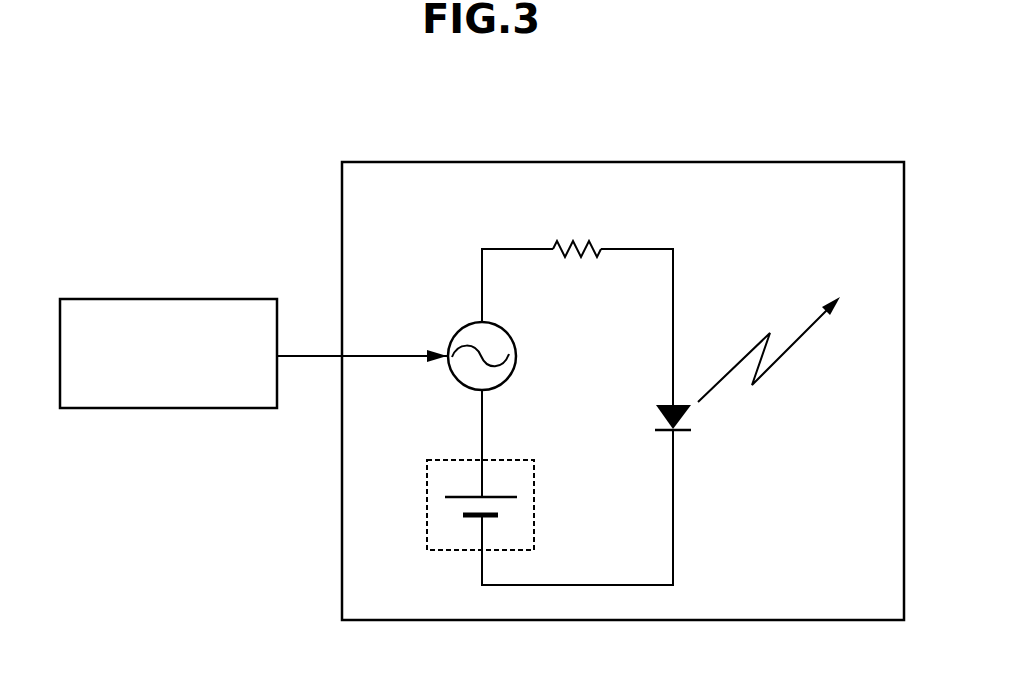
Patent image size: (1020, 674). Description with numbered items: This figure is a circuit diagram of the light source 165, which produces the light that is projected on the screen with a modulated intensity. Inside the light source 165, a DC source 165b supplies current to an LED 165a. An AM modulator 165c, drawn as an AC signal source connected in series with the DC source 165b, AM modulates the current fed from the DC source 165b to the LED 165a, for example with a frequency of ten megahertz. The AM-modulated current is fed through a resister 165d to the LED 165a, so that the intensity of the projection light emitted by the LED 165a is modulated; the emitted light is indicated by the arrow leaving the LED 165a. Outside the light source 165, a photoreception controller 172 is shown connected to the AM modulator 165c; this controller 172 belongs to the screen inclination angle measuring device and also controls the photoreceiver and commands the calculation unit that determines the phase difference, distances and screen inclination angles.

The light source 165 is at (803, 162).
The LED (Light Emitting Diode) 165a is at (688, 413).
The DC source 165b is at (460, 459).
The AM modulator 165c is at (462, 330).
The resister 165d is at (596, 246).
The photoreception controller 172 is at (215, 299).